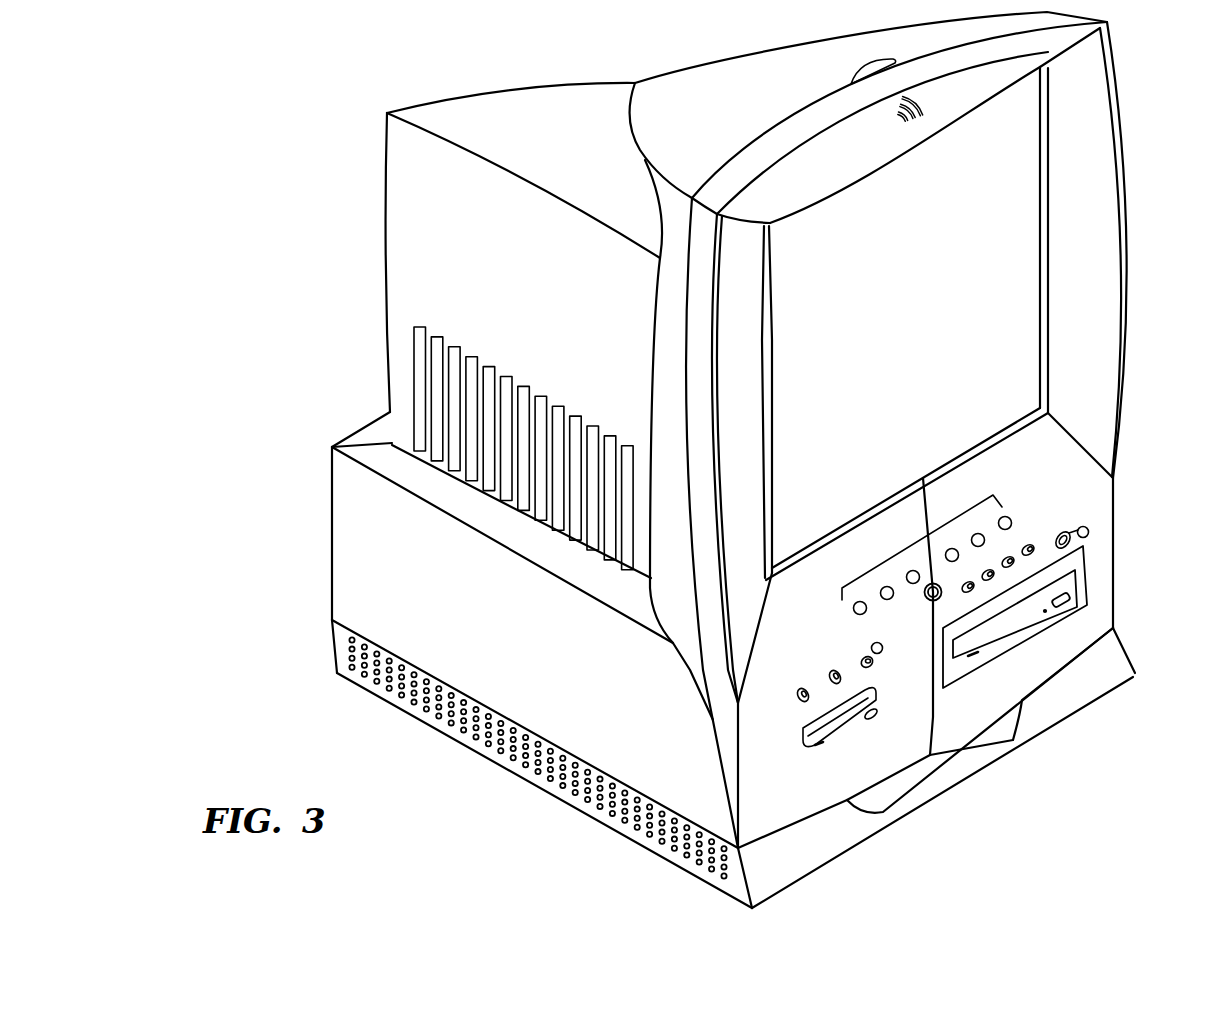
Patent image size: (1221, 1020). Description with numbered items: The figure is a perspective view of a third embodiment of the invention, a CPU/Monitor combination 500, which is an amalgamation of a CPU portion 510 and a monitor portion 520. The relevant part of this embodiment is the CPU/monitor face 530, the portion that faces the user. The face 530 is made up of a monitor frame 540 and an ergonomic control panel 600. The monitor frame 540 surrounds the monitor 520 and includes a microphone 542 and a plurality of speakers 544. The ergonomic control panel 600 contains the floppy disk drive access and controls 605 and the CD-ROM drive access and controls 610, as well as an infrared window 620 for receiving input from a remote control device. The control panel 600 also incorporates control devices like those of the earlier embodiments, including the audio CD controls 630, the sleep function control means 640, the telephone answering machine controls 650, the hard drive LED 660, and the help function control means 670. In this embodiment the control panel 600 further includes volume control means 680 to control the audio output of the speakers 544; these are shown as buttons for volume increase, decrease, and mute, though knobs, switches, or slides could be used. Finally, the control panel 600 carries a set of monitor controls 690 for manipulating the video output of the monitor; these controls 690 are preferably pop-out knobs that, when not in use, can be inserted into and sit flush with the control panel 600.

The CPU/Monitor combination 500 is at (323, 130).
The CPU portion 510 is at (474, 628).
The monitor portion 520 is at (529, 297).
The CPU/monitor face 530 is at (928, 300).
The monitor frame 540 is at (818, 189).
The microphone 542 is at (925, 108).
The speakers 544 is at (1109, 236).
The ergonomic control panel 600 is at (818, 595).
The floppy disk drive access and controls 605 is at (805, 740).
The CD-ROM drive access and controls 610 is at (1000, 622).
The infrared window 620 is at (800, 700).
The audio CD controls 630 is at (972, 576).
The sleep function control means 640 is at (932, 602).
The telephone answering machine (TAM) controls 650 is at (878, 662).
The hard drive LED 660 is at (902, 650).
The help function control means 670 is at (830, 675).
The volume control means 680 is at (1080, 545).
The monitor controls 690 is at (930, 540).